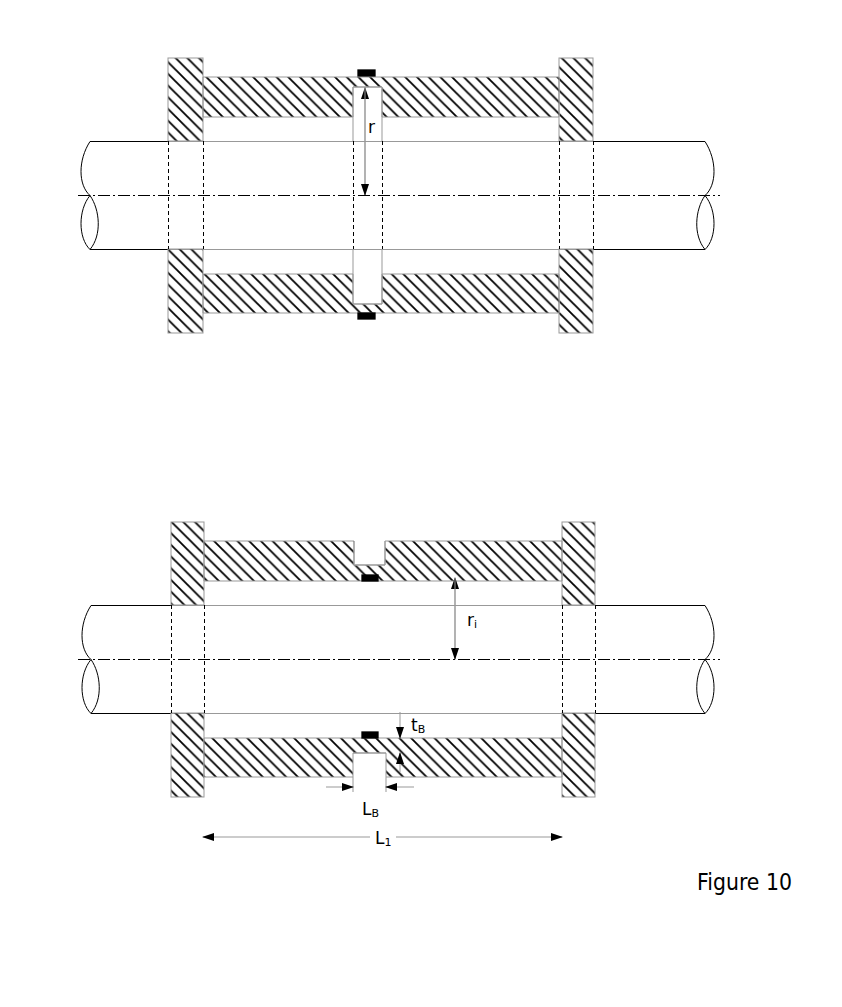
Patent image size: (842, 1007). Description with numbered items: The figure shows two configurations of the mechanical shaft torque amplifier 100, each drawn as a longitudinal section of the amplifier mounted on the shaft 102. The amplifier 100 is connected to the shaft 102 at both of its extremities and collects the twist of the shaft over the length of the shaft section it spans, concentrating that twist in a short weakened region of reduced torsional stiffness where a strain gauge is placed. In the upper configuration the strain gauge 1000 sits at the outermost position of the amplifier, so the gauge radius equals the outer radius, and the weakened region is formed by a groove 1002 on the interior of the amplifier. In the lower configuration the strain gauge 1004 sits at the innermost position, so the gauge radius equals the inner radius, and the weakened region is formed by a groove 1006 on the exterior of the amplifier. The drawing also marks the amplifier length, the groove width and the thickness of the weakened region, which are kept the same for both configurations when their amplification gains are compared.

The mechanical shaft torque amplifier 100 is at (268, 297).
The shaft 102 is at (149, 225).
The strain gauge 1000 is at (367, 319).
The groove 1002 is at (375, 282).
The strain gauge 1004 is at (368, 573).
The groove 1006 is at (377, 552).